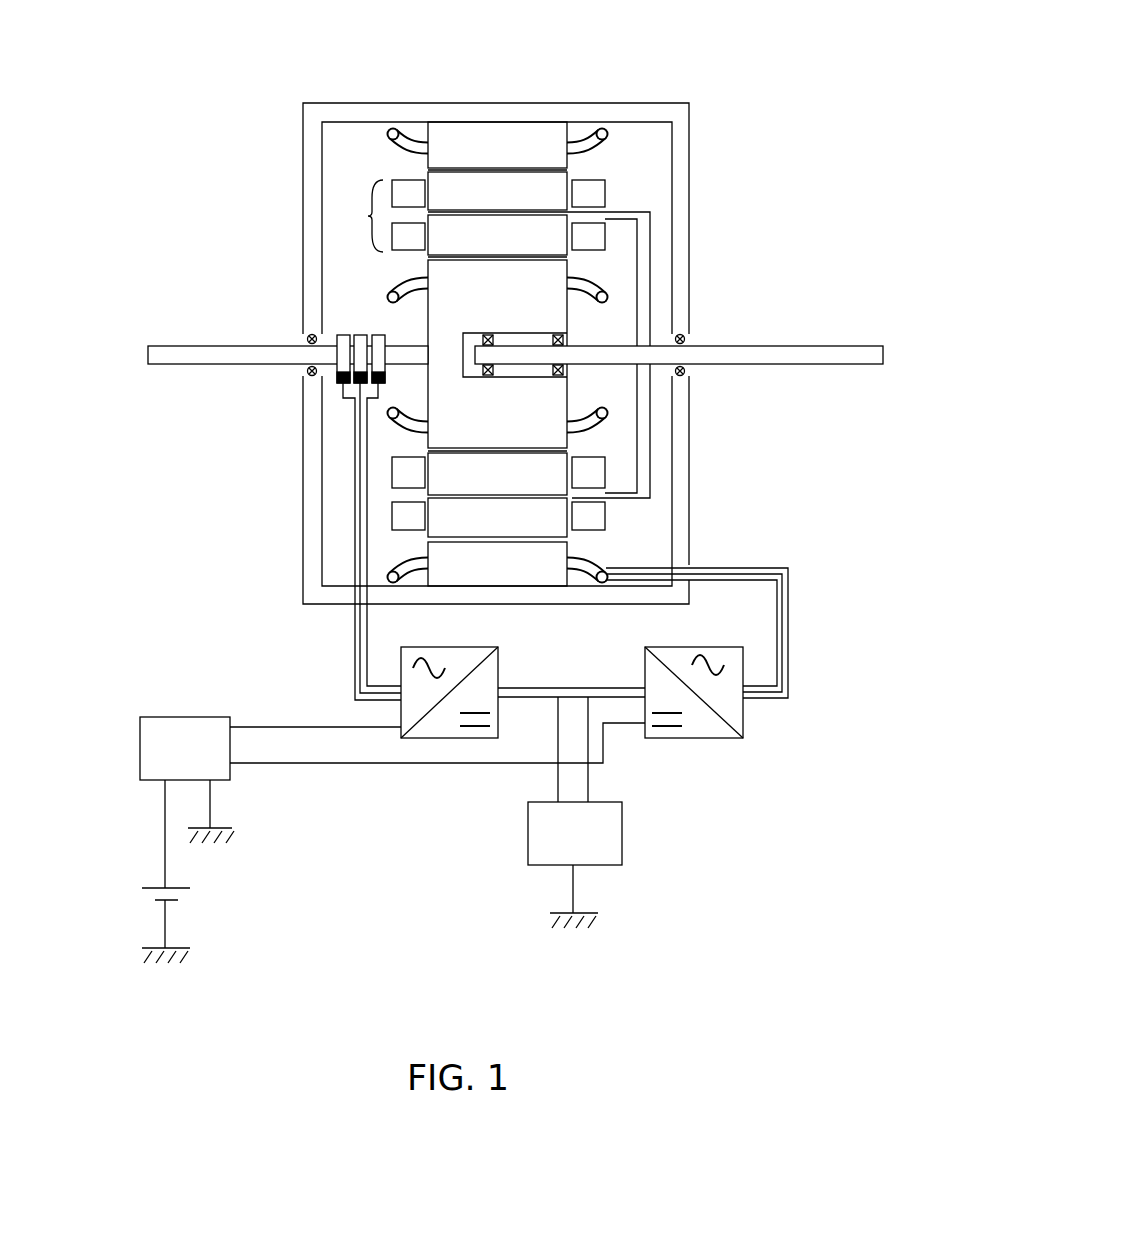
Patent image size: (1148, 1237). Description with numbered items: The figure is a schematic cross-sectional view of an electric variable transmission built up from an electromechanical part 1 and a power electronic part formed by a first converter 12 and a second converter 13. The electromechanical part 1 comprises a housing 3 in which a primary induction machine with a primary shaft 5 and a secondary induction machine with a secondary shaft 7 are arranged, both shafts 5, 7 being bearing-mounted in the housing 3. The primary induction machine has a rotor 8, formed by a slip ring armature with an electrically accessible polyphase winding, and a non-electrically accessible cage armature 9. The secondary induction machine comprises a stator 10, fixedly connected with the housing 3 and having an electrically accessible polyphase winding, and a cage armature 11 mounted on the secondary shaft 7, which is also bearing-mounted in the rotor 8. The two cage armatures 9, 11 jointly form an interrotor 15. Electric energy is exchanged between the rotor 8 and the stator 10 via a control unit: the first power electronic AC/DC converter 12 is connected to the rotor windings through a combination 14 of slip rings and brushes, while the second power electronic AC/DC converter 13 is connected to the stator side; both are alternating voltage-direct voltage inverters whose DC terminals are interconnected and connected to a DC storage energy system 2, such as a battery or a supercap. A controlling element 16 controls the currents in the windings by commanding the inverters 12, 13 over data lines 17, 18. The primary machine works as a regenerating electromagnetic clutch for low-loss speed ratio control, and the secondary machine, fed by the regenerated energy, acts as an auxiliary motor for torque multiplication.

The electromechanical converter 1 is at (549, 308).
The DC storage energy system 2 is at (622, 843).
The housing 3 is at (377, 103).
The primary shaft 5 is at (200, 345).
The secondary shaft 7 is at (832, 346).
The rotor 8 is at (528, 316).
The cage armature 9 is at (547, 233).
The stator 10 is at (472, 143).
The cage armature 11 is at (547, 193).
The first power electronic AC/DC converter 12 is at (440, 740).
The second power electronic AC/DC converter 13 is at (703, 740).
The combination of slip rings and brushes 14 is at (350, 388).
The interrotor 15 is at (499, 201).
The controlling element 16 is at (177, 717).
The data line 17 is at (293, 725).
The data line 18 is at (320, 765).